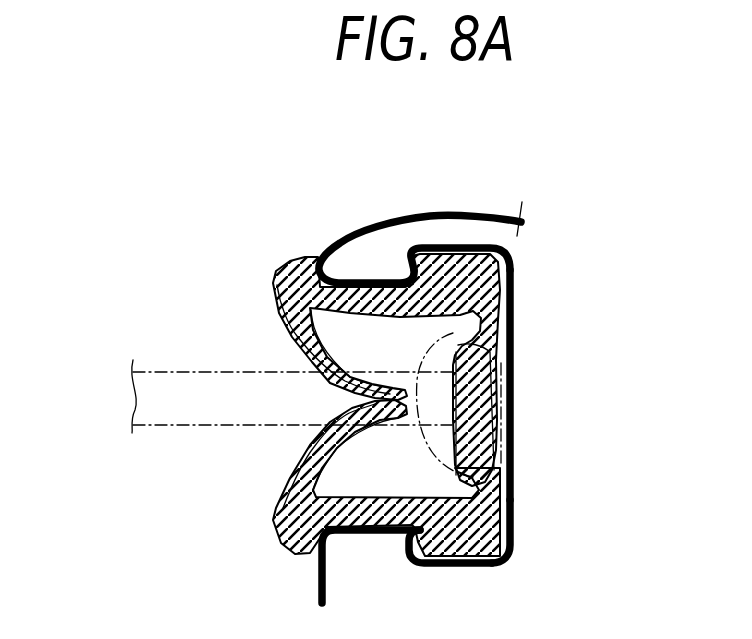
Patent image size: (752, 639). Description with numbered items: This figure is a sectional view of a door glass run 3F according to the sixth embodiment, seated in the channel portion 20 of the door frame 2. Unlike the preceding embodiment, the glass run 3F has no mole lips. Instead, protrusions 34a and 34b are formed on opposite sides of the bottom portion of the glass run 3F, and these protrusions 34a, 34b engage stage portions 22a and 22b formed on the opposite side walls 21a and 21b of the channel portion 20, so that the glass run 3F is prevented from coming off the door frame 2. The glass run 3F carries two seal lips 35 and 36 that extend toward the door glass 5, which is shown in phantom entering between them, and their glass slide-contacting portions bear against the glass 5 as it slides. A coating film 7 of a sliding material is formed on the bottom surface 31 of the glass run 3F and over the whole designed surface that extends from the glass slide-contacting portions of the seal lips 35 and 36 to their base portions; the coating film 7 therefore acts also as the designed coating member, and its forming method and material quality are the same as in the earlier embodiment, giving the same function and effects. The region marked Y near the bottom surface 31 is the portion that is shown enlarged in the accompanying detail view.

The glass run 3F is at (266, 256).
The door frame 2 is at (488, 198).
The door glass 5 is at (187, 372).
The coating film 7 is at (300, 326).
The channel portion 20 is at (513, 457).
The side wall 21a is at (372, 550).
The side wall 21b is at (345, 278).
The stage portion 22a is at (408, 560).
The stage portion 22b is at (402, 240).
The bottom surface 31 is at (490, 340).
The protrusion 34a is at (513, 523).
The protrusion 34b is at (500, 249).
The seal lip 35 is at (290, 352).
The seal lip 36 is at (318, 446).
The portion Y is at (501, 382).